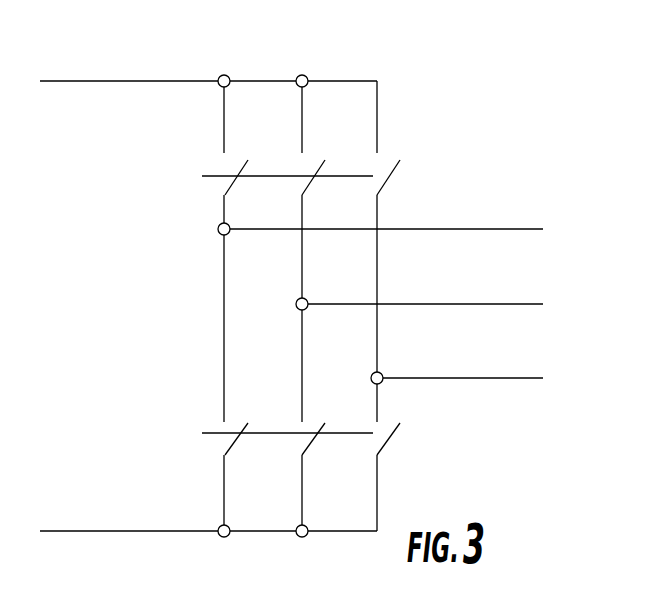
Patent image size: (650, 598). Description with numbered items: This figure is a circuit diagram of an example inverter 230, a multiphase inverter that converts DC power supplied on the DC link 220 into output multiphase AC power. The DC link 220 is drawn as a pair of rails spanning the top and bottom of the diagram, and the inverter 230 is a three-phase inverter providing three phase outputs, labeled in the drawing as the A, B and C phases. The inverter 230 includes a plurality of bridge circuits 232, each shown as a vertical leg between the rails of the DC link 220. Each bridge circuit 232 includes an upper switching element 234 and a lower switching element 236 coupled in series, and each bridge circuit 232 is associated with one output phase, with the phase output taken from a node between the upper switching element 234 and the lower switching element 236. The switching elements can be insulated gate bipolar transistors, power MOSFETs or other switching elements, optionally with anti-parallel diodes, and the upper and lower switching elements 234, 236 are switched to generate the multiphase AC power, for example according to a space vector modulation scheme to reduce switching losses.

The DC link 220 is at (76, 81).
The inverter 230 is at (308, 275).
The bridge circuit 232 is at (225, 120).
The upper switching element 234 is at (145, 183).
The lower switching element 236 is at (145, 434).